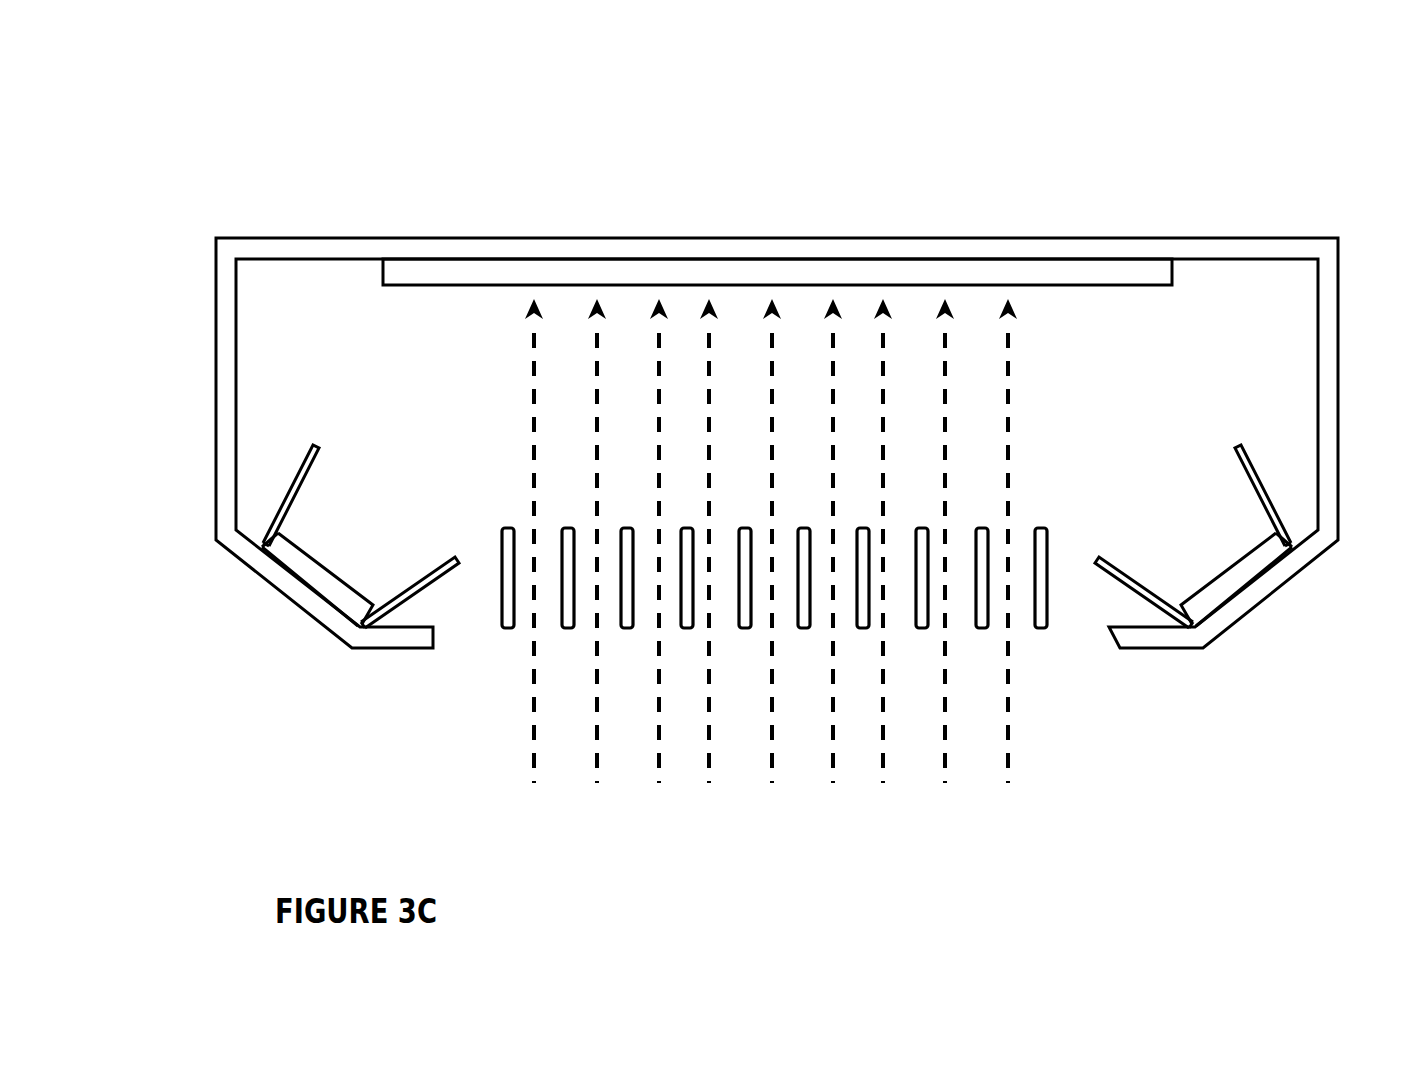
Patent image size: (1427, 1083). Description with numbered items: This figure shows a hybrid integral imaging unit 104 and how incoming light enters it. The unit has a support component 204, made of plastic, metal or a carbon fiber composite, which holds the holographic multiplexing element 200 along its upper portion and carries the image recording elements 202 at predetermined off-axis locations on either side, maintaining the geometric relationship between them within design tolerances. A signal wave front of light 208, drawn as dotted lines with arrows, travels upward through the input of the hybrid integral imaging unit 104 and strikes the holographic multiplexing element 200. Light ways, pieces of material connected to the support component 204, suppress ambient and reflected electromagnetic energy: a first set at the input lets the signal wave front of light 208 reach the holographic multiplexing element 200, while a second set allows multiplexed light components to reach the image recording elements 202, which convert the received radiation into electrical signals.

The hybrid integral imaging unit 104 is at (296, 118).
The holographic multiplexing element 200 is at (507, 272).
The image recording element 202 is at (308, 578).
The support component 204 is at (237, 260).
The signal wave front of light 208 is at (1027, 838).